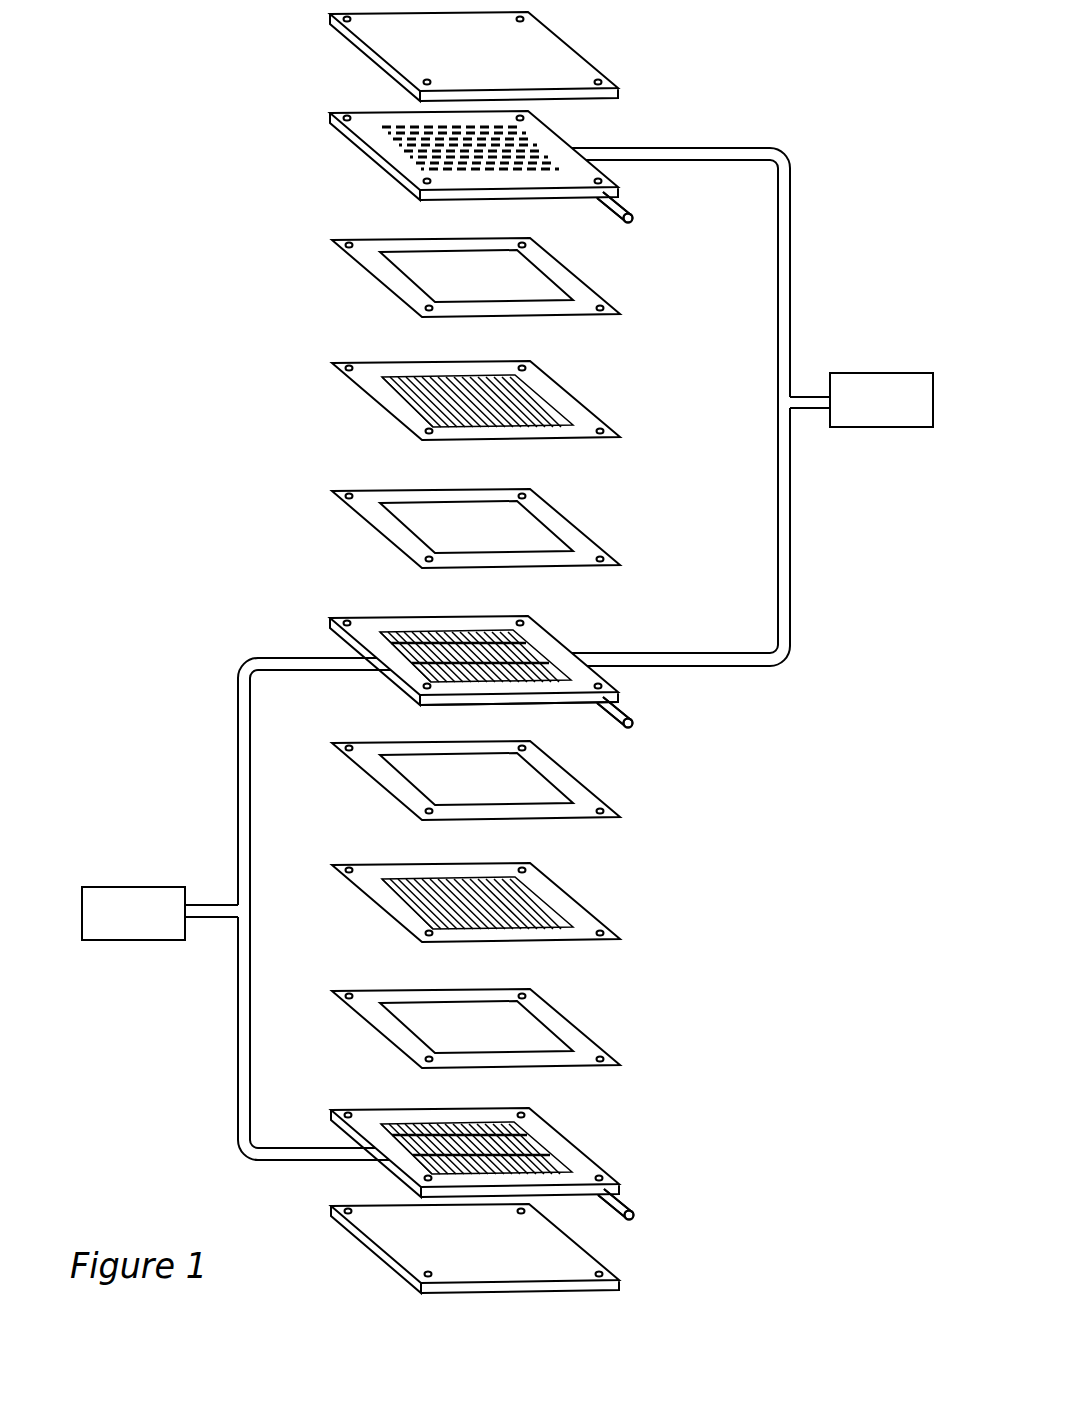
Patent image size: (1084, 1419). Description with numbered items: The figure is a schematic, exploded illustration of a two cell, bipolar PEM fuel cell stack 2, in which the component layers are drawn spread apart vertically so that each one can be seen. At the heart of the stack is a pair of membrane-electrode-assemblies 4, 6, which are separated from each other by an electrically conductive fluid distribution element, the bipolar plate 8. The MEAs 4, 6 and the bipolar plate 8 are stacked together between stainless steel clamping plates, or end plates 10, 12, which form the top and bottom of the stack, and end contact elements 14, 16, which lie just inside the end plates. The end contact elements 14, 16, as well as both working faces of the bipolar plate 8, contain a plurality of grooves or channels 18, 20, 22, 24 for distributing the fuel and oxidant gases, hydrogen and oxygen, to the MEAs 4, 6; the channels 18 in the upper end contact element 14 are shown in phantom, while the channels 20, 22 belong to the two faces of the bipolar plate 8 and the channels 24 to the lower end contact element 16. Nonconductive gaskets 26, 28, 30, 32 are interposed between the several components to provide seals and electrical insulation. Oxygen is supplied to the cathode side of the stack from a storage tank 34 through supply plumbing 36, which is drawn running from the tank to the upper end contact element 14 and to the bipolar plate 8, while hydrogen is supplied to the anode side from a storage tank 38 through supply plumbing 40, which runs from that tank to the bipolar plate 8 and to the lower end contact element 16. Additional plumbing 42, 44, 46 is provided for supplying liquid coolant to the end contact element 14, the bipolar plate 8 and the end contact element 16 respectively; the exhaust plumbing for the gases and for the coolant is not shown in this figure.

The fuel cell stack 2 is at (507, 652).
The membrane-electrode-assembly 4 is at (362, 400).
The membrane-electrode-assembly 6 is at (605, 906).
The bipolar plate 8 is at (572, 626).
The end plate 10 is at (360, 53).
The end plate 12 is at (620, 1256).
The end contact element 14 is at (348, 146).
The end contact element 16 is at (611, 1151).
The channels 18 is at (535, 147).
The channels 20 is at (400, 632).
The channels 22 is at (573, 708).
The channels 24 is at (525, 1142).
The gasket 26 is at (372, 271).
The gasket 28 is at (373, 528).
The gasket 30 is at (618, 816).
The gasket 32 is at (577, 1023).
The storage tank 34 is at (878, 372).
The supply plumbing 36 is at (797, 567).
The storage tank 38 is at (102, 890).
The supply plumbing 40 is at (243, 703).
The plumbing 42 is at (635, 213).
The plumbing 44 is at (628, 716).
The plumbing 46 is at (625, 1205).